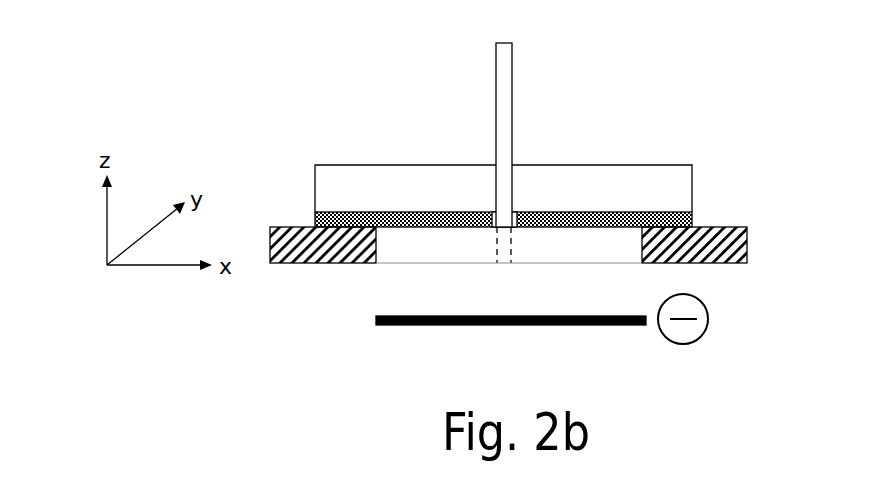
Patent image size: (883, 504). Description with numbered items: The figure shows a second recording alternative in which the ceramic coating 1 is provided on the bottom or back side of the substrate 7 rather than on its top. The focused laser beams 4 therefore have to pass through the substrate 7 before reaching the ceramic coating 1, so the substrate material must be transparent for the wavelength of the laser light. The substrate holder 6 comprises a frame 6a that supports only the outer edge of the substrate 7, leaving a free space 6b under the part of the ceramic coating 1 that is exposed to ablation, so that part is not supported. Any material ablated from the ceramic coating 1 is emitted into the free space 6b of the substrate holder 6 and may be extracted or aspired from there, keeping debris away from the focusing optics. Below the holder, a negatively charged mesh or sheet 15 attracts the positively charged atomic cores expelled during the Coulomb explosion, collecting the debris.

The ceramic coating 1 is at (693, 223).
The focused laser beams 4 is at (512, 72).
The substrate holder 6 is at (560, 282).
The frame 6a is at (700, 263).
The free space 6b is at (420, 251).
The substrate 7 is at (668, 187).
The negatively charged mesh or sheet 15 is at (620, 326).